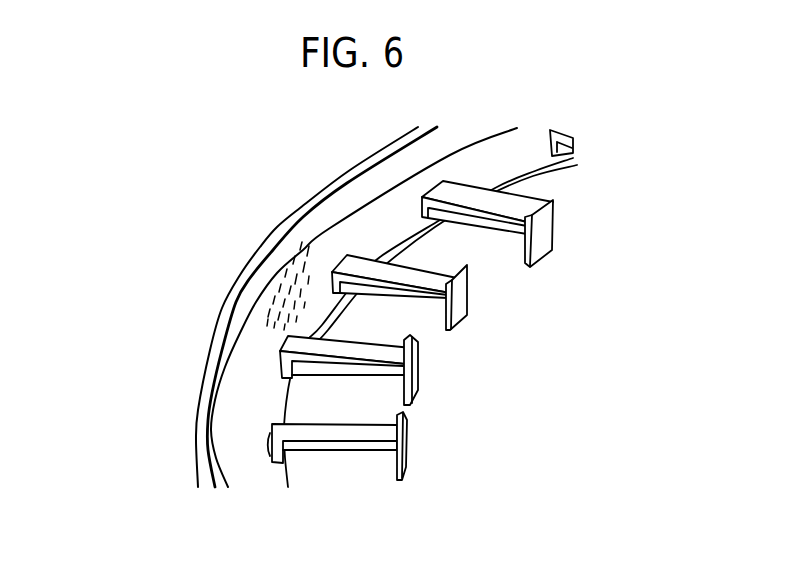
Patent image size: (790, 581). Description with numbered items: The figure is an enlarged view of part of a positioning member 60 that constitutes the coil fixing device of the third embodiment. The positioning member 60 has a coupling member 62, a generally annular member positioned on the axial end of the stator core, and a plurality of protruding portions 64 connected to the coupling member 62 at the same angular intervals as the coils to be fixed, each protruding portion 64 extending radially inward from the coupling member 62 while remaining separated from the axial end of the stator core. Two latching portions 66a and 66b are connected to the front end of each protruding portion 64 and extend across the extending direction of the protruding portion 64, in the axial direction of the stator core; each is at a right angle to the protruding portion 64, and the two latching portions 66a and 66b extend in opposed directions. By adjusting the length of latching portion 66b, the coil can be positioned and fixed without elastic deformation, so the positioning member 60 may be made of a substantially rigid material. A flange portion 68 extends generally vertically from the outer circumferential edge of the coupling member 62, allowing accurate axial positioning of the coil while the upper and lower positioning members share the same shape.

The positioning member 60 is at (170, 178).
The coupling member 62 is at (242, 395).
The protruding portion 64 is at (410, 278).
The latching portion 66a is at (465, 318).
The latching portion 66b is at (460, 280).
The flange portion 68 is at (350, 172).